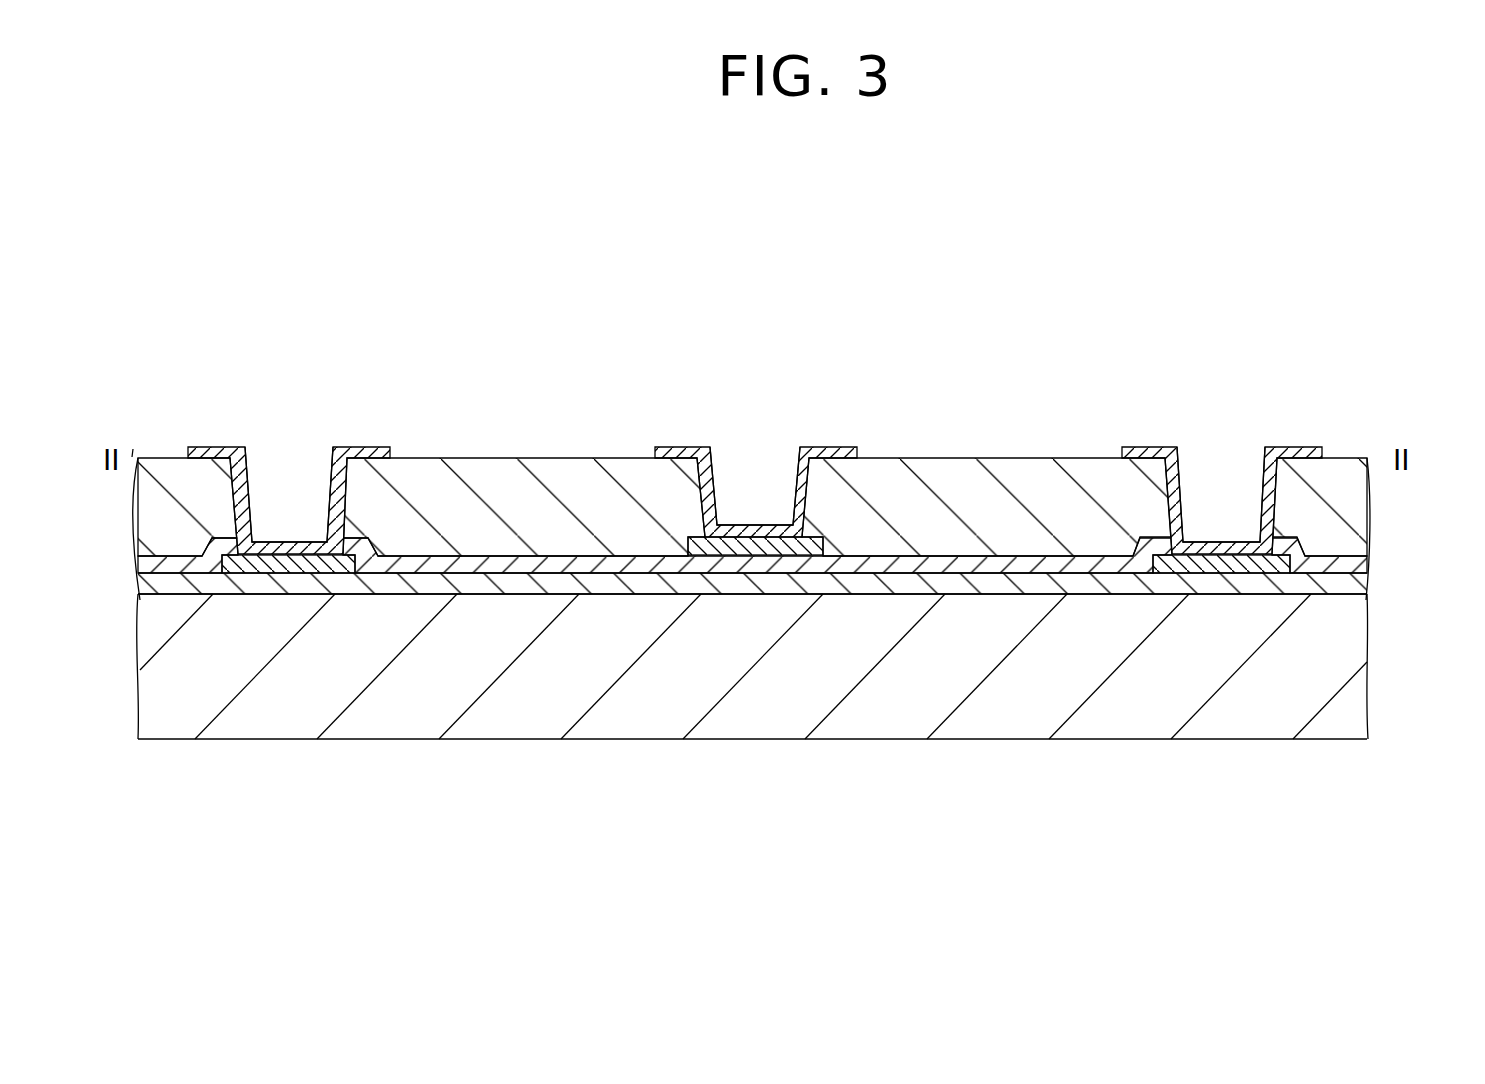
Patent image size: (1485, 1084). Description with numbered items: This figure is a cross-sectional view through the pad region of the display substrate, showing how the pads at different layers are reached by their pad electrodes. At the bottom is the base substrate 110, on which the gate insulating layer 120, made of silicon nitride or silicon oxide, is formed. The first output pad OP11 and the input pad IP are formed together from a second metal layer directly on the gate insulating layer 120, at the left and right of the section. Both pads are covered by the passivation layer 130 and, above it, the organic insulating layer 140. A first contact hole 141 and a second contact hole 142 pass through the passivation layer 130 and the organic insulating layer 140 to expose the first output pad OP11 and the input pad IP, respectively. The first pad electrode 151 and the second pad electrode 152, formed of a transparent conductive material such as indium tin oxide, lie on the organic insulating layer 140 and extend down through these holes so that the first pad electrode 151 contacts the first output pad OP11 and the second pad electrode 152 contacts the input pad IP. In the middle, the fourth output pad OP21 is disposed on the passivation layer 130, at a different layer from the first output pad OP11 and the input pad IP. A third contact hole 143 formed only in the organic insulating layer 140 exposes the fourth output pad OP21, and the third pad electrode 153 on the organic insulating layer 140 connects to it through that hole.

The base substrate 110 is at (1350, 645).
The gate insulating layer 120 is at (1350, 584).
The passivation layer 130 is at (1350, 565).
The organic insulating layer 140 is at (1350, 503).
The first contact hole 141 is at (277, 505).
The second contact hole 142 is at (1204, 505).
The third contact hole 143 is at (758, 505).
The first pad electrode 151 is at (211, 446).
The second pad electrode 152 is at (1140, 446).
The third pad electrode 153 is at (679, 446).
The first output pad OP11 is at (297, 558).
The fourth output pad OP21 is at (766, 550).
The input pad IP is at (1226, 560).